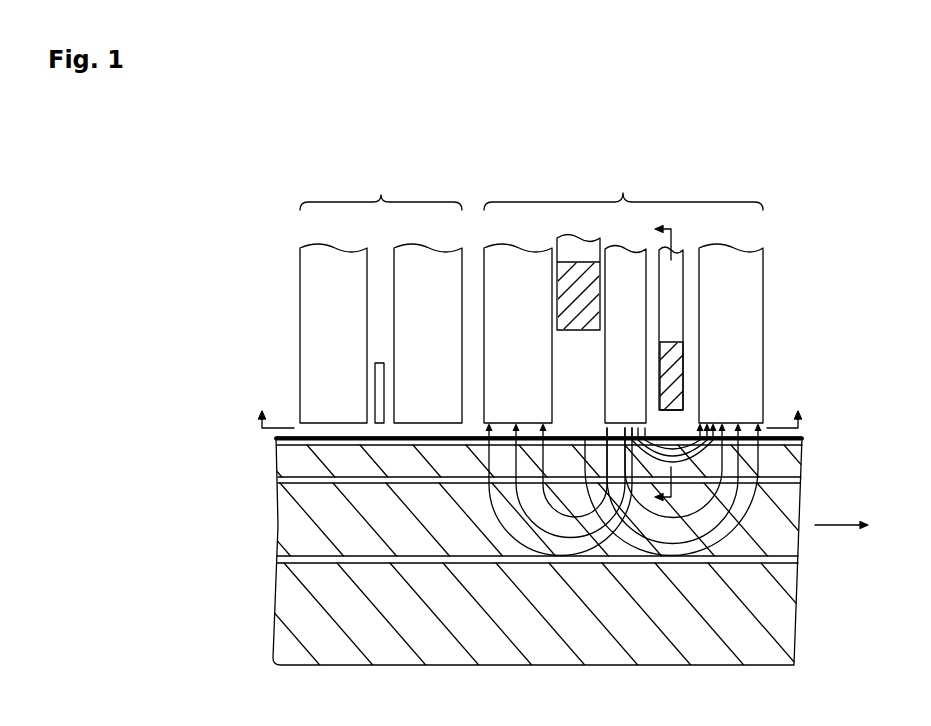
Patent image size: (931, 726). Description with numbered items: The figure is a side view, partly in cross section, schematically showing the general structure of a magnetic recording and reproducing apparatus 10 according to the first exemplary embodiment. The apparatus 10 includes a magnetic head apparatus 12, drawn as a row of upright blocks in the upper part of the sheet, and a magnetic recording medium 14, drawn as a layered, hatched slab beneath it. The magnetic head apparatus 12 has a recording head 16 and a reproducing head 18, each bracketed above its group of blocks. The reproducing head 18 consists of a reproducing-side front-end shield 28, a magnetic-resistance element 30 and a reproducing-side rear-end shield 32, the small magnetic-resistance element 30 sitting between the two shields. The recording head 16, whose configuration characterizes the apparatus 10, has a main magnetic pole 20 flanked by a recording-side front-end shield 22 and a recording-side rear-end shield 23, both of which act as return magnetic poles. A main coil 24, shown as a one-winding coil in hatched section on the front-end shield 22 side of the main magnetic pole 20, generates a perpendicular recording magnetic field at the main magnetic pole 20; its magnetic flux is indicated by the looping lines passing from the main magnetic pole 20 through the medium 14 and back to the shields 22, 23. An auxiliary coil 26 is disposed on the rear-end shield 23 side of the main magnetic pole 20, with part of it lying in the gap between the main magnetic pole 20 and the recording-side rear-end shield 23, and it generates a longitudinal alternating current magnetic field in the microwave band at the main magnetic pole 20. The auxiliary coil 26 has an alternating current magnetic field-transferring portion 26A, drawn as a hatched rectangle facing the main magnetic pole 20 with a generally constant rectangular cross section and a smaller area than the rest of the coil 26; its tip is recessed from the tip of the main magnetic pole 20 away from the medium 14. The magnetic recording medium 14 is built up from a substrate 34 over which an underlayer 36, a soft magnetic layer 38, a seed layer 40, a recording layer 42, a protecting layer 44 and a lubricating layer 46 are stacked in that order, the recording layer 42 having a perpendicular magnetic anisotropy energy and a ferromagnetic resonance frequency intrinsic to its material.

The magnetic recording and reproducing apparatus 10 is at (543, 101).
The magnetic head apparatus 12 is at (254, 321).
The magnetic recording medium 14 is at (250, 508).
The recording head 16 is at (623, 291).
The reproducing head 18 is at (381, 292).
The main magnetic pole 20 is at (619, 247).
The recording-side front-end shield 22 is at (513, 247).
The recording-side rear-end shield 23 is at (727, 247).
The main coil 24 is at (600, 310).
The auxiliary coil 26 is at (683, 307).
The alternating current magnetic field-transferring portion 26A is at (683, 393).
The reproducing-side front-end shield 28 is at (321, 247).
The magnetic-resistance element 30 is at (384, 381).
The reproducing-side rear-end shield 32 is at (421, 247).
The substrate 34 is at (795, 601).
The underlayer 36 is at (797, 560).
The soft magnetic layer 38 is at (803, 518).
The seed layer 40 is at (803, 481).
The recording layer 42 is at (803, 466).
The protecting layer 44 is at (801, 445).
The lubricating layer 46 is at (800, 437).